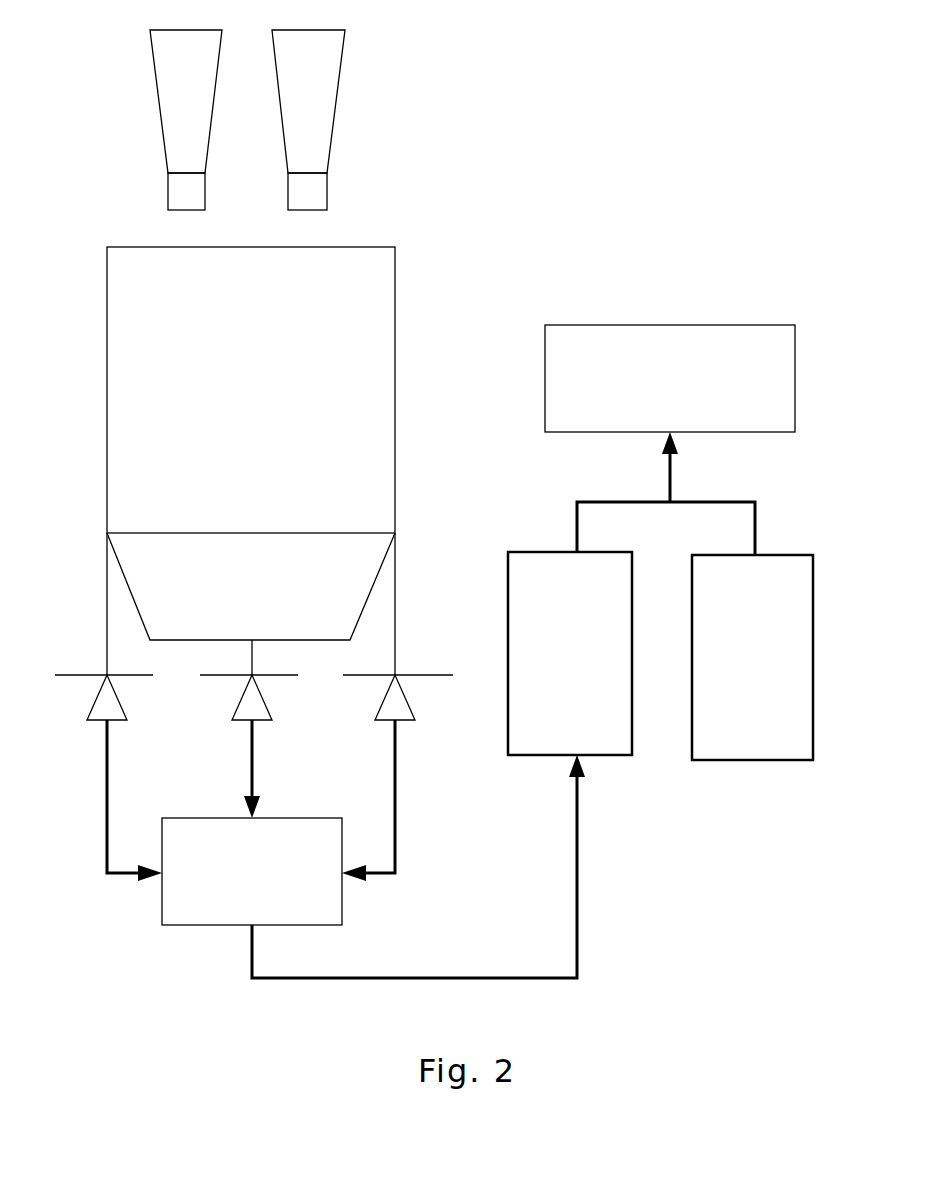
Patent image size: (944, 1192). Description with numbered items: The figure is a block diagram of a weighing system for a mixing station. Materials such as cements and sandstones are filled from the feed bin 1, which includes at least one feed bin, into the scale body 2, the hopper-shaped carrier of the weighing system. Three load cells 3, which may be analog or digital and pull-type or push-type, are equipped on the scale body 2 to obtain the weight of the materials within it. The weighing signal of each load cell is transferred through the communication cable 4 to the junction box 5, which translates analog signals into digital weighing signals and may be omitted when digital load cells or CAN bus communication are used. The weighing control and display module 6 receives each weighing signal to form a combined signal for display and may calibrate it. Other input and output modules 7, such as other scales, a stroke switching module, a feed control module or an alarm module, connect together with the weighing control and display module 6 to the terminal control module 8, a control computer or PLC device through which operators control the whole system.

The feed bin 1 is at (337, 97).
The scale body 2 is at (395, 322).
The load cells 3 is at (402, 690).
The communication cable 4 is at (402, 822).
The junction box 5 is at (342, 897).
The weighing control and display module 6 is at (632, 630).
The other input and output modules 7 is at (815, 622).
The terminal control module 8 is at (743, 325).